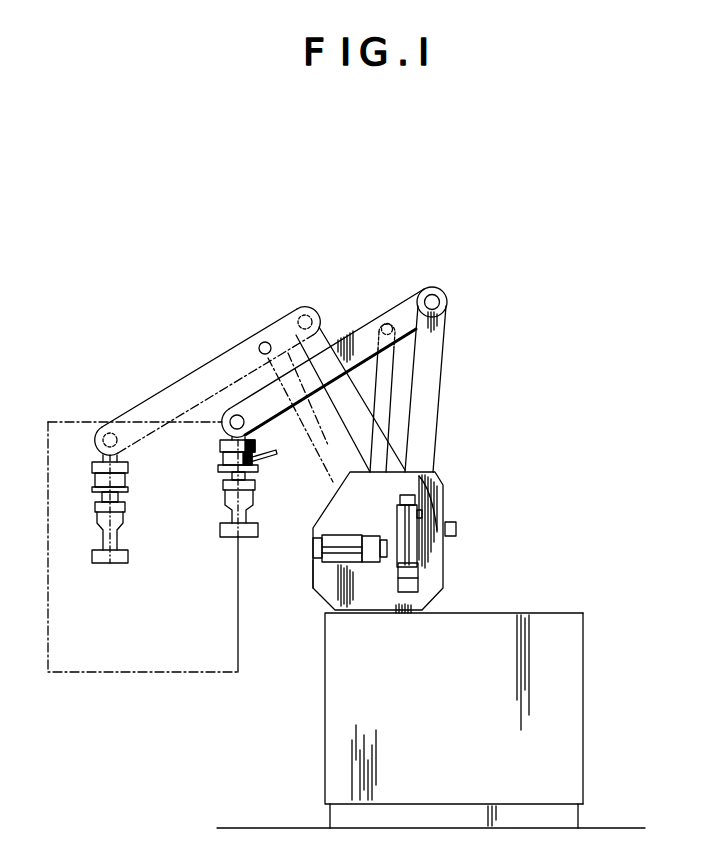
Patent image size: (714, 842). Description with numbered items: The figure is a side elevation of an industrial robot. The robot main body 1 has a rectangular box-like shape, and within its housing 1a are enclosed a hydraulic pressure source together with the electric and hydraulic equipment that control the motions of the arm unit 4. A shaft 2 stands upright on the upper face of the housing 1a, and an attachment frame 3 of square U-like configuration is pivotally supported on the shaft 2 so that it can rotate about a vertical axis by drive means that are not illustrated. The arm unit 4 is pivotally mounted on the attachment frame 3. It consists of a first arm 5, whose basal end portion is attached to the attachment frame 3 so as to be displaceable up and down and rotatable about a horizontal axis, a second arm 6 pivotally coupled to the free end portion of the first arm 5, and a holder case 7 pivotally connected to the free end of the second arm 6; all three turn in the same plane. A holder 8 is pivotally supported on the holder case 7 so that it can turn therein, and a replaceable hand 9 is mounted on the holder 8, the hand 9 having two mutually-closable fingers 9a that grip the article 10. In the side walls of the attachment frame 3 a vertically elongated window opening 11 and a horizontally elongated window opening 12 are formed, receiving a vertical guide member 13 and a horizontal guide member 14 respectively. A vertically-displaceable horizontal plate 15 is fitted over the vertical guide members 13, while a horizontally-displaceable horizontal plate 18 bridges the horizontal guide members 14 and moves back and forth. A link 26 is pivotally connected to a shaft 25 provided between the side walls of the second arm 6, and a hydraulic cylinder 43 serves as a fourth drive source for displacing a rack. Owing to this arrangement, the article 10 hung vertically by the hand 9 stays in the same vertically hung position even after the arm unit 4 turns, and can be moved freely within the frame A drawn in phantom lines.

The robot main body 1 is at (549, 612).
The housing 1a is at (584, 688).
The shaft 2 is at (383, 613).
The attachment frame 3 is at (446, 510).
The arm unit 4 is at (447, 323).
The first arm 5 is at (428, 403).
The second arm 6 is at (369, 338).
The holder case 7 is at (220, 446).
The holder 8 is at (223, 456).
The hand 9 is at (258, 466).
The fingers 9a is at (226, 505).
The article 10 is at (233, 538).
The window opening 11 is at (426, 493).
The window opening 12 is at (318, 571).
The vertical guide member 13 is at (410, 548).
The horizontal guide member 14 is at (336, 545).
The vertically-displaceable horizontal plate 15 is at (418, 573).
The horizontally-displaceable horizontal plate 18 is at (369, 555).
The shaft 25 is at (387, 321).
The link 26 is at (398, 370).
The hydraulic cylinder 43 is at (457, 528).
The frame A is at (144, 673).